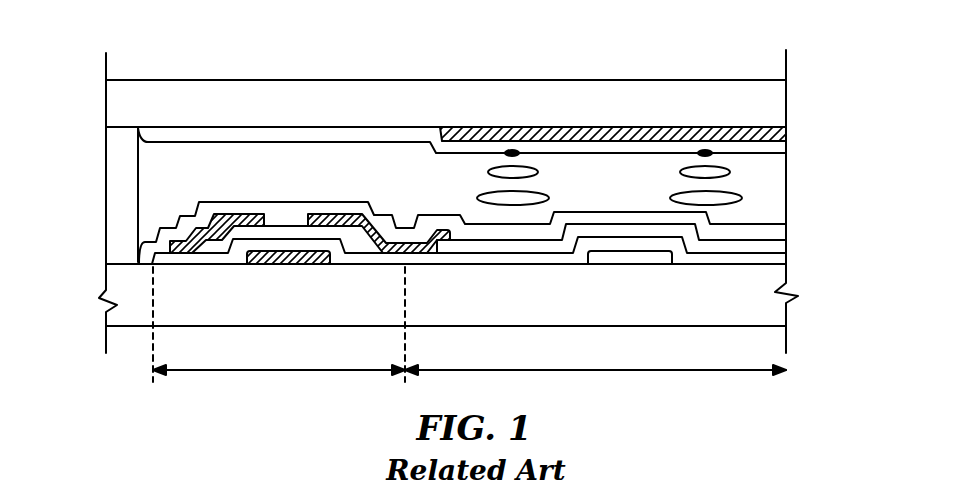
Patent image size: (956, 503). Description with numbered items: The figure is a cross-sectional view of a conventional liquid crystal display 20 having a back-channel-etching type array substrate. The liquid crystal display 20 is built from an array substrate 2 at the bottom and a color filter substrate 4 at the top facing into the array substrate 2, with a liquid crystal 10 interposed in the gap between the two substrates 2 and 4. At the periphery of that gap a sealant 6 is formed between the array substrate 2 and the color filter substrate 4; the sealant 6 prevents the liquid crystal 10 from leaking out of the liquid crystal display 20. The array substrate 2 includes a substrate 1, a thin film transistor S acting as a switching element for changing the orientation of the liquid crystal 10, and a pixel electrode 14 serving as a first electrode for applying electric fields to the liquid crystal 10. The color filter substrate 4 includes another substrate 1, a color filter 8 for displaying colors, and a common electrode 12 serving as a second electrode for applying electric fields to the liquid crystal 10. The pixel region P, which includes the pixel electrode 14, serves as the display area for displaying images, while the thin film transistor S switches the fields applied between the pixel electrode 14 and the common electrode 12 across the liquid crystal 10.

The liquid crystal display 20 is at (282, 72).
The array substrate 2 is at (799, 225).
The color filter substrate 4 is at (799, 77).
The substrate 1 is at (506, 114).
The sealant 6 is at (115, 198).
The color filter 8 is at (650, 130).
The common electrode 12 is at (757, 147).
The liquid crystal 10 is at (799, 150).
The pixel electrode 14 is at (777, 245).
The thin film transistor S is at (279, 324).
The pixel region P is at (595, 324).